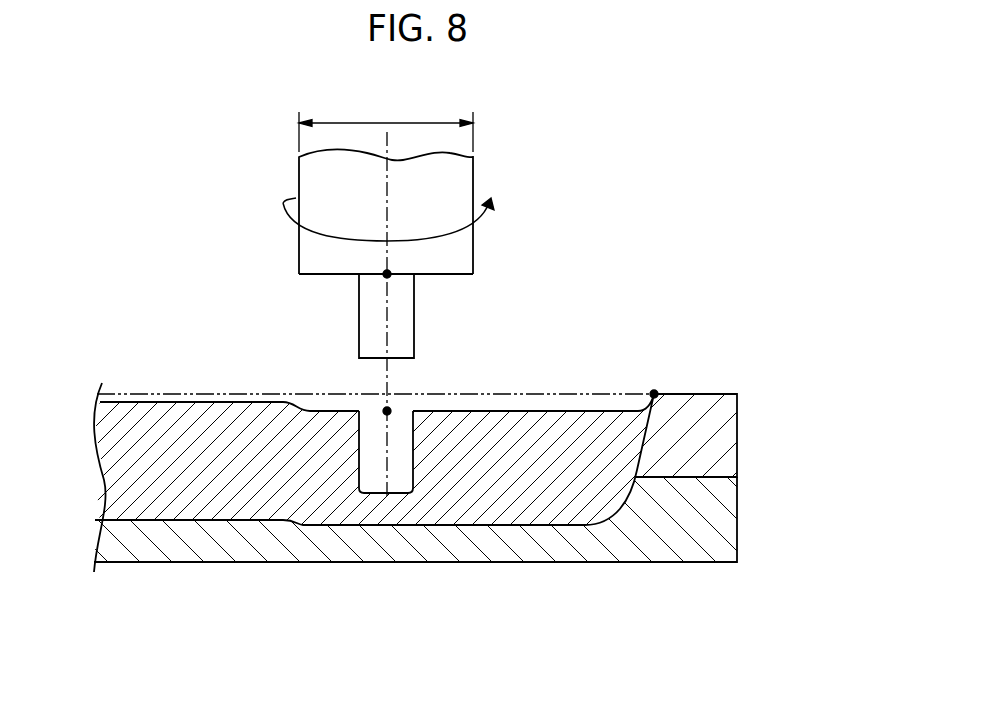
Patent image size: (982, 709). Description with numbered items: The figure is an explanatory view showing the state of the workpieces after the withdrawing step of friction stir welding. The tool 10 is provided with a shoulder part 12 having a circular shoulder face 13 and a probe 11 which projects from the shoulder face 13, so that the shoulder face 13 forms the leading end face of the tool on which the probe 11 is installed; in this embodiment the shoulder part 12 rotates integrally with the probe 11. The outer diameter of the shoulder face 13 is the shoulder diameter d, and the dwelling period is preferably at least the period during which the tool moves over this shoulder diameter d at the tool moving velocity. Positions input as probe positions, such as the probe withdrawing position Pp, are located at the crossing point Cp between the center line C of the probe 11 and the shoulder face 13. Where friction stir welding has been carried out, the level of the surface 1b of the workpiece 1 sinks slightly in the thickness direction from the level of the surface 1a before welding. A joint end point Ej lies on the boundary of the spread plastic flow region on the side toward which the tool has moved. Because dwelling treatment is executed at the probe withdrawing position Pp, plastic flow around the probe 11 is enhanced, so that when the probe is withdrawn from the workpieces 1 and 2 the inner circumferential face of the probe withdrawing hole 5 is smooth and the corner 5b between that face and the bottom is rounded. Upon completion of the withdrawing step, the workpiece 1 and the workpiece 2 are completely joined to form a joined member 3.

The workpiece 1 is at (717, 432).
The surface before friction stir welding 1a is at (166, 392).
The surface of the workpiece 1b is at (216, 400).
The workpiece 2 is at (705, 527).
The joined member 3 is at (822, 415).
The probe withdrawing hole 5 is at (403, 488).
The corner 5b is at (357, 492).
The tool 10 is at (566, 239).
The probe 11 is at (413, 314).
The shoulder part 12 is at (458, 255).
The shoulder face 13 is at (320, 275).
The center line of the probe C is at (387, 187).
The crossing point Cp is at (386, 276).
The probe withdrawing position Pp is at (387, 409).
The joint end point Ej is at (654, 394).
The shoulder diameter d is at (386, 125).